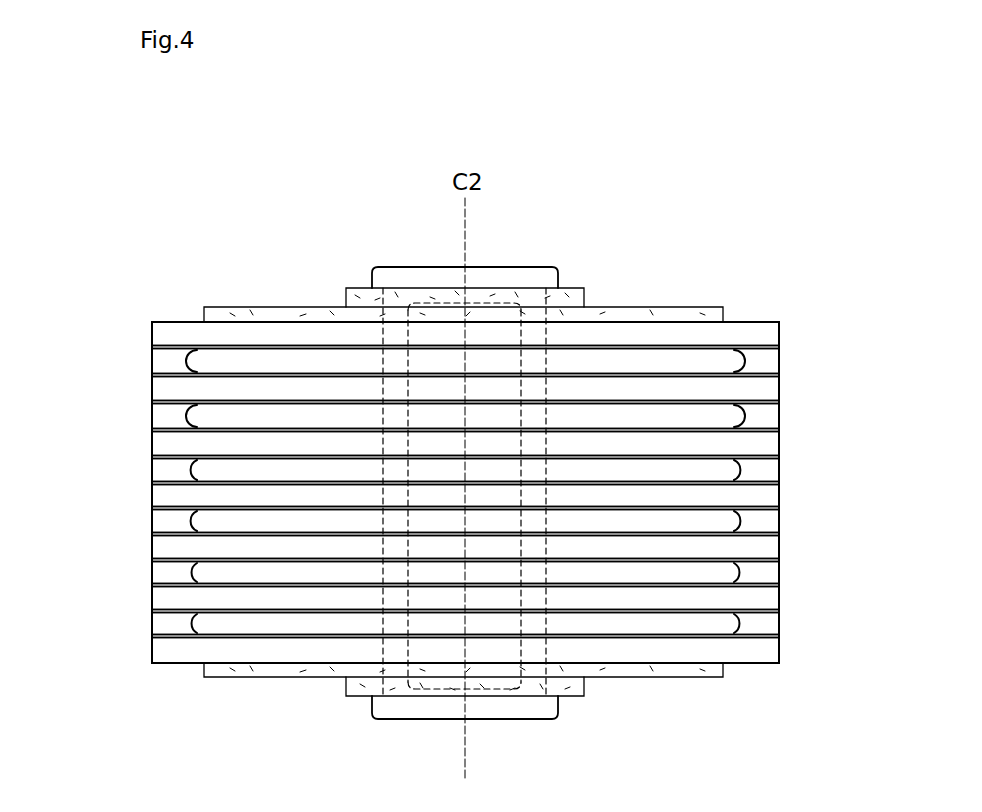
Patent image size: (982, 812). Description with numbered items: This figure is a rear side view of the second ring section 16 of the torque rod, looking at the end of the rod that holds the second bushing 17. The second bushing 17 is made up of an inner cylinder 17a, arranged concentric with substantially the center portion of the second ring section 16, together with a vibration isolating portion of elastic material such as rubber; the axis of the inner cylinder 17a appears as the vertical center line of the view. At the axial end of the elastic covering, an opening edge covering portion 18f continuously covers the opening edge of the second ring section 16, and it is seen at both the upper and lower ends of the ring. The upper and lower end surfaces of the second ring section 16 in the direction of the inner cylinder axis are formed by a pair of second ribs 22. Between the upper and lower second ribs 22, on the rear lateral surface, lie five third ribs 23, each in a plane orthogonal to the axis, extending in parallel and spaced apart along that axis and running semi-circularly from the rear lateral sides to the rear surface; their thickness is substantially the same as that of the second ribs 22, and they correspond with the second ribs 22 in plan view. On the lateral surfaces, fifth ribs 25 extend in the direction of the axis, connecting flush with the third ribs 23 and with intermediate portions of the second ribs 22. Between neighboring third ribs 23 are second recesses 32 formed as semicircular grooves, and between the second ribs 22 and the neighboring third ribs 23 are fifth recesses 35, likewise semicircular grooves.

The second ring section 16 is at (120, 262).
The second bushing 17 is at (677, 294).
The inner cylinder 17a is at (535, 275).
The opening edge covering portion 18f is at (257, 322).
The second ribs 22 is at (764, 335).
The third ribs 23 is at (770, 388).
The fifth ribs 25 is at (150, 362).
The second recesses 32 is at (765, 415).
The fifth recesses 35 is at (757, 363).